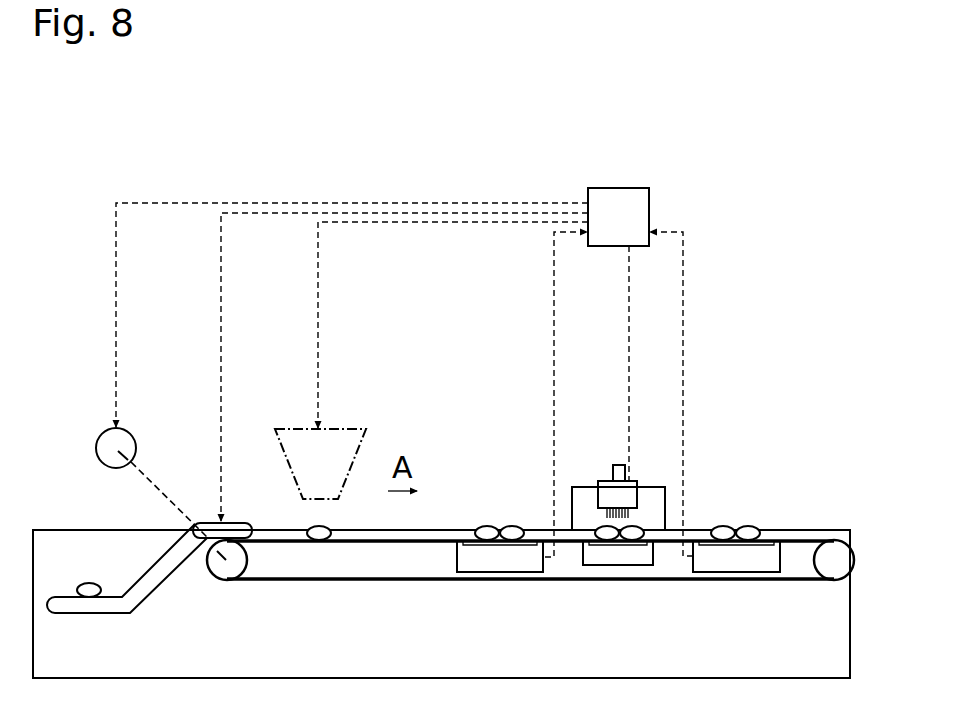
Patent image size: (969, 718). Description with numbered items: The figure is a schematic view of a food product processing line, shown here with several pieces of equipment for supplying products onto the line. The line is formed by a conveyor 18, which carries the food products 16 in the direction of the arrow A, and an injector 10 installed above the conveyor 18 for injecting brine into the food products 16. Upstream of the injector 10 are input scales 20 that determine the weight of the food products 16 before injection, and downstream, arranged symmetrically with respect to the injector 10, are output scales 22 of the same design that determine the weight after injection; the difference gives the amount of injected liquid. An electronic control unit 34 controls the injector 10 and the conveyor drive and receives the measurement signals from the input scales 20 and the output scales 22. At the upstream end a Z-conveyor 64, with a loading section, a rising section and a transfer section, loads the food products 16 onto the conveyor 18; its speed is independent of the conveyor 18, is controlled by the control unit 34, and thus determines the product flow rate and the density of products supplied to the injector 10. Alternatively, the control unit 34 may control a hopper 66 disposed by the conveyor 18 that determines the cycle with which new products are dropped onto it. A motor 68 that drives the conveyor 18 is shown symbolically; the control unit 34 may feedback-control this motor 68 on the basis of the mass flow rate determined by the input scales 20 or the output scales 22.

The injector 10 is at (611, 492).
The food products 16 is at (489, 522).
The conveyor 18 is at (773, 476).
The input scales 20 is at (491, 560).
The output scales 22 is at (728, 560).
The electronic control unit 34 is at (618, 203).
The Z-conveyor 64 is at (155, 577).
The hopper 66 is at (333, 440).
The motor 68 is at (107, 430).